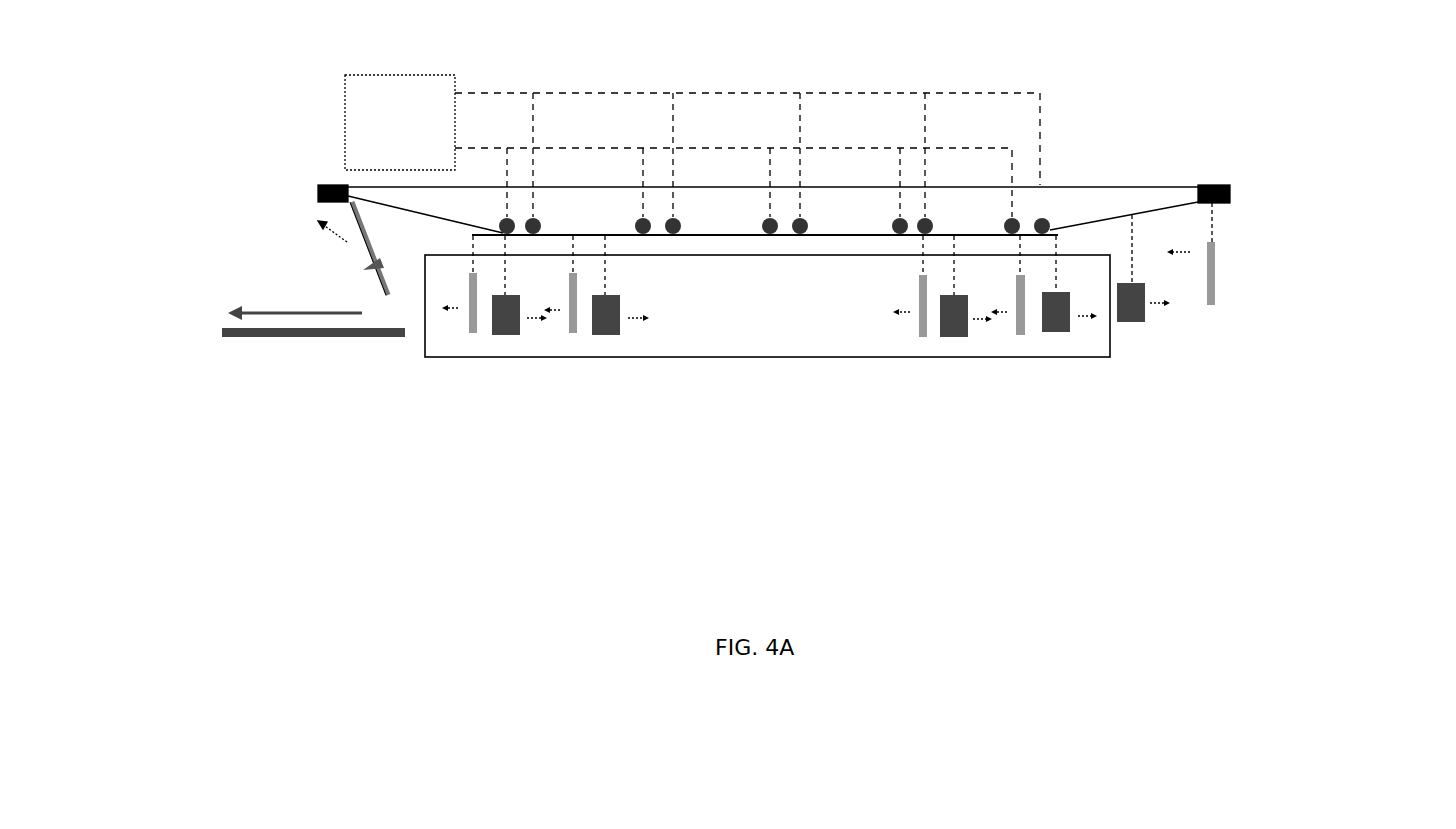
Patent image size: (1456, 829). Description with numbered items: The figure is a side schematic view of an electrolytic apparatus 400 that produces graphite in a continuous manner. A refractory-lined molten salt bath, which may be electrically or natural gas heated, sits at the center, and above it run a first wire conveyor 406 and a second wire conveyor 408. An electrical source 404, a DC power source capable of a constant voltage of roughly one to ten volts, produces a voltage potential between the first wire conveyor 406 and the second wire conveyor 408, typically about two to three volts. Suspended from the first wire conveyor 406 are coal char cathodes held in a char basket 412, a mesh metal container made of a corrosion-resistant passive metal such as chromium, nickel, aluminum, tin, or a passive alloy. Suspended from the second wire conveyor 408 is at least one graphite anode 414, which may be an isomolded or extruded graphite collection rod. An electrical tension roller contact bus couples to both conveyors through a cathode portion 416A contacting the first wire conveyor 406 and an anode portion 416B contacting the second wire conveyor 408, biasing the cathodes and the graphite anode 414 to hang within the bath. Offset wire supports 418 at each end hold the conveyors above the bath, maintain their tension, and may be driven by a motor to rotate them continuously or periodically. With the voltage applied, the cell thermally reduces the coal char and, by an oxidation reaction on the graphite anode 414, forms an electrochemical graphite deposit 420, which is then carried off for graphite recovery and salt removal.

The electrolytic apparatus 400 is at (158, 135).
The electrical source 404 is at (415, 75).
The first wire conveyor 406 is at (1093, 186).
The second wire conveyor 408 is at (773, 211).
The char basket 412 is at (510, 336).
The graphite anode 414 is at (473, 334).
The cathode portion 416A is at (812, 147).
The anode portion 416B is at (952, 92).
The offset wire supports 418 is at (1216, 186).
The electrochemical graphite deposit 420 is at (383, 263).